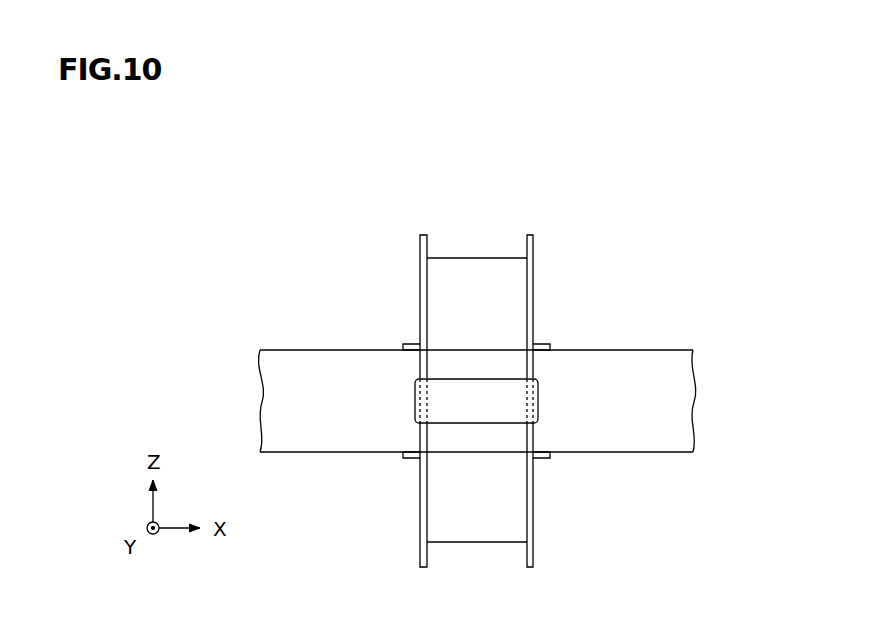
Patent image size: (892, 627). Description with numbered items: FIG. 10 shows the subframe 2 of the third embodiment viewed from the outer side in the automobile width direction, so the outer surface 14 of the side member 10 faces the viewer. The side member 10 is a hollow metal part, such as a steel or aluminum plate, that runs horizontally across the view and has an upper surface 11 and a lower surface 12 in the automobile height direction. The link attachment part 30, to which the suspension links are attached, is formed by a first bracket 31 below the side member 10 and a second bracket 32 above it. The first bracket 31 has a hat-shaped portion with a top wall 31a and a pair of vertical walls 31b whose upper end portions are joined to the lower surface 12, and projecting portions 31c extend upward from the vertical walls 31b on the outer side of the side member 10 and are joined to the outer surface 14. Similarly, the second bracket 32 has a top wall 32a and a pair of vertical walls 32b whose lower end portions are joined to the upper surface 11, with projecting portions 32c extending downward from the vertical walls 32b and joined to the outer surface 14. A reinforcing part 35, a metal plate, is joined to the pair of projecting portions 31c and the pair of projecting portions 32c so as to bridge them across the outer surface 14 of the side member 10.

The subframe 2 is at (641, 207).
The side member 10 is at (320, 345).
The upper surface 11 is at (636, 350).
The lower surface 12 is at (637, 452).
The outer surface 14 is at (656, 412).
The link attachment part 30 is at (392, 244).
The first bracket 31 is at (450, 558).
The top wall 31a is at (478, 522).
The vertical walls 31b is at (420, 509).
The projecting portions 31c is at (420, 440).
The second bracket 32 is at (447, 244).
The top wall 32a is at (478, 278).
The vertical walls 32b is at (420, 305).
The projecting portions 32c is at (420, 363).
The reinforcing part 35 is at (489, 412).